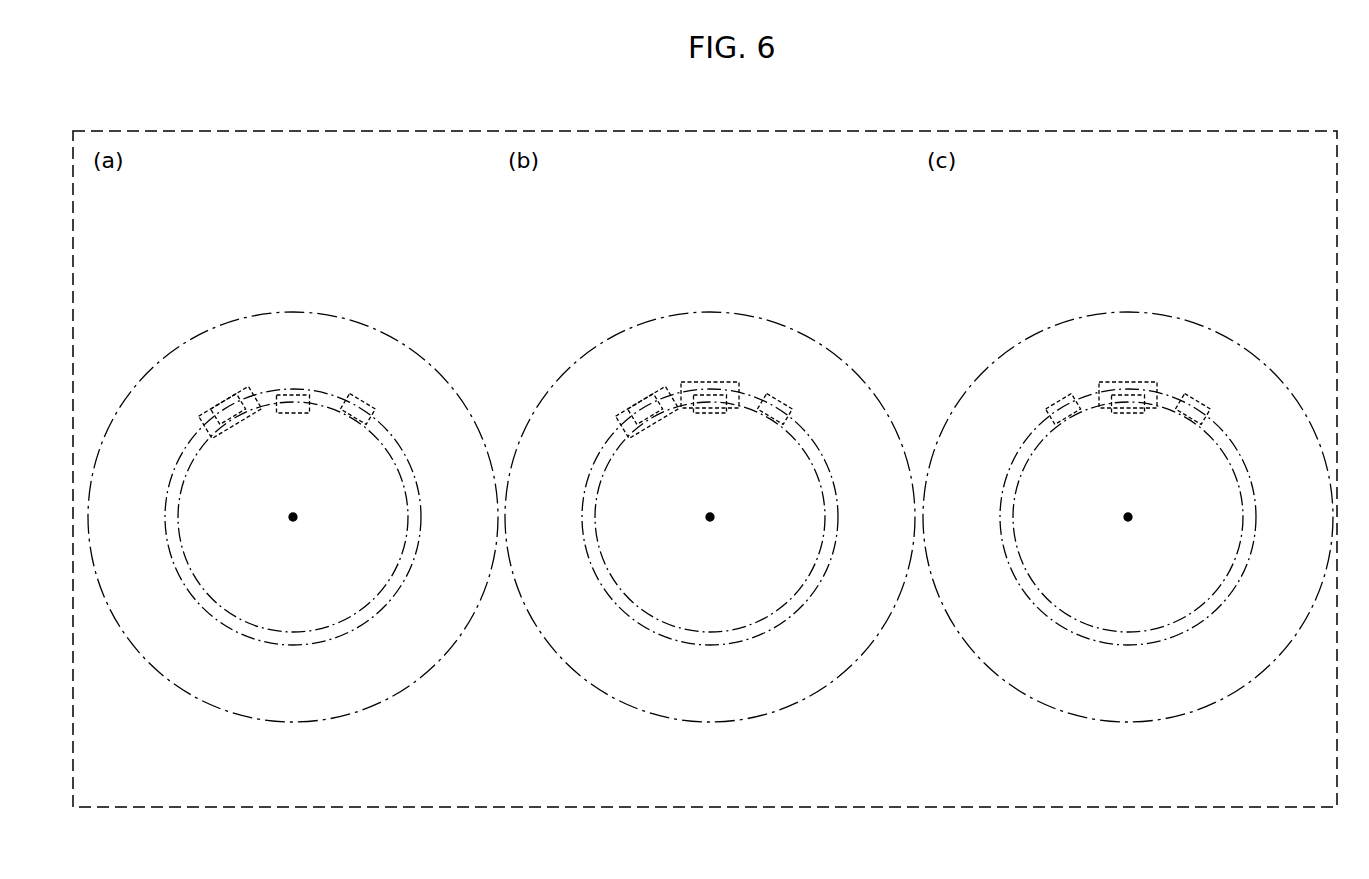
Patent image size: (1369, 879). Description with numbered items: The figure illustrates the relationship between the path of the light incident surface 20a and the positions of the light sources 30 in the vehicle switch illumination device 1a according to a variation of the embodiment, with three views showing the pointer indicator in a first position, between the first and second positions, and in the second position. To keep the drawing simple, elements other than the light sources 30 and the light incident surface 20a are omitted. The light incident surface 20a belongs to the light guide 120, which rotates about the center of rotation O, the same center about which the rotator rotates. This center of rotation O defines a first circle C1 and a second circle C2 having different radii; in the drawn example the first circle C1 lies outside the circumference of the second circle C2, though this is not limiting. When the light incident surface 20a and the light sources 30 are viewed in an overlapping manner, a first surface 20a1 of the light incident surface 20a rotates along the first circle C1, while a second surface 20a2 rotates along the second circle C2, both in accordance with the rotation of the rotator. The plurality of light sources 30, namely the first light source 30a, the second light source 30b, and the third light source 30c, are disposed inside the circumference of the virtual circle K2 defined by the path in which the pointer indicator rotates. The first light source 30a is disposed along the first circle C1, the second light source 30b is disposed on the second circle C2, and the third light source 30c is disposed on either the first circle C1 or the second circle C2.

The vehicle switch illumination device 1a is at (710, 480).
The virtual circle K2 is at (318, 312).
The light incident surface 20a is at (645, 407).
The light guide 120 is at (678, 426).
The first surface 20a1 is at (679, 412).
The second surface 20a2 is at (736, 411).
The light source 30 is at (709, 373).
The first light source 30a is at (228, 394).
The second light source 30b is at (292, 393).
The third light source 30c is at (360, 394).
The first circle C1 is at (174, 488).
The second circle C2 is at (181, 513).
The center of rotation O is at (291, 520).